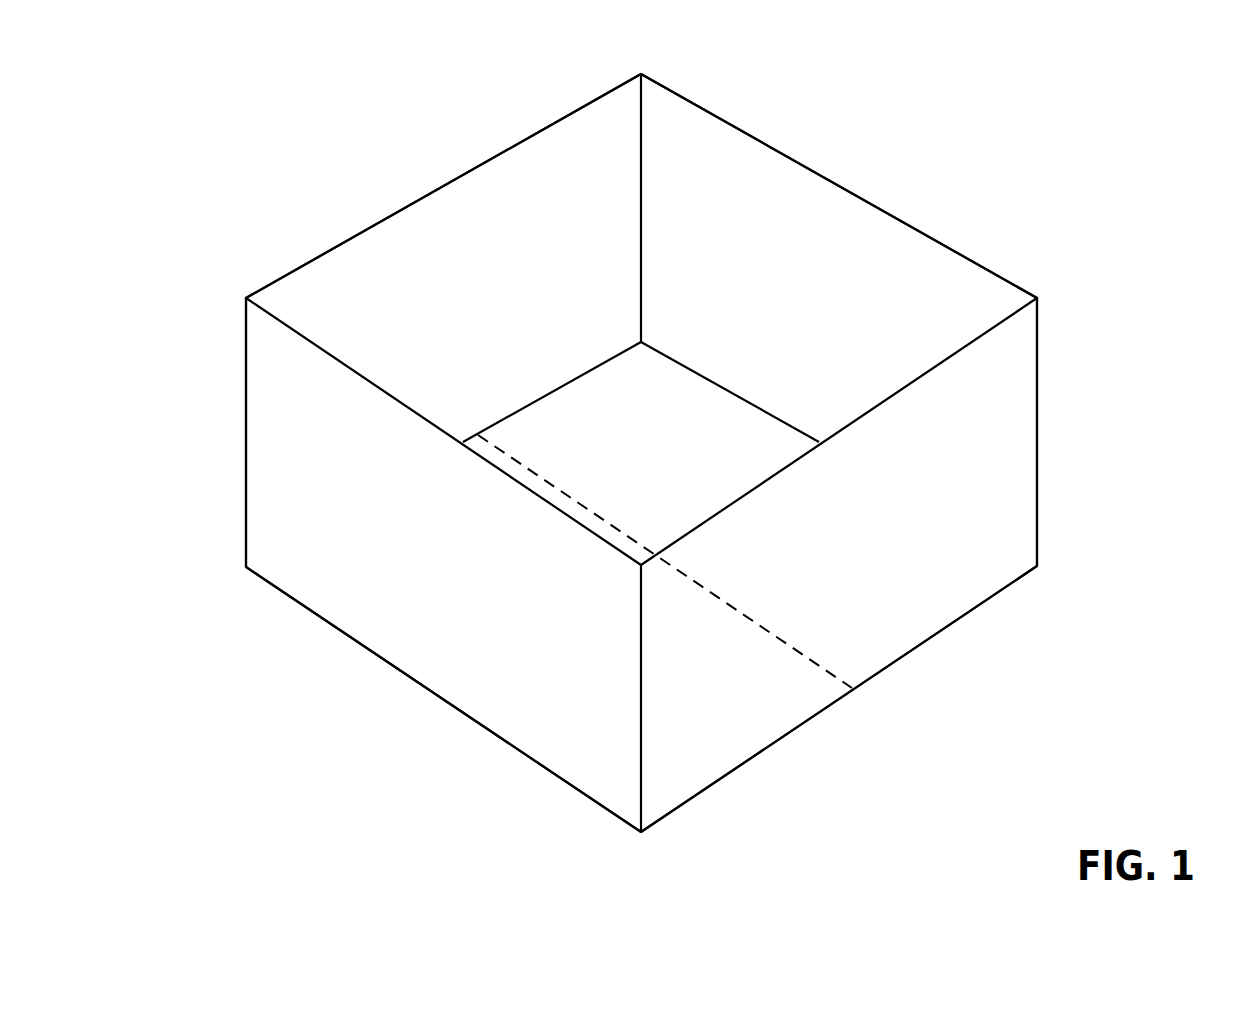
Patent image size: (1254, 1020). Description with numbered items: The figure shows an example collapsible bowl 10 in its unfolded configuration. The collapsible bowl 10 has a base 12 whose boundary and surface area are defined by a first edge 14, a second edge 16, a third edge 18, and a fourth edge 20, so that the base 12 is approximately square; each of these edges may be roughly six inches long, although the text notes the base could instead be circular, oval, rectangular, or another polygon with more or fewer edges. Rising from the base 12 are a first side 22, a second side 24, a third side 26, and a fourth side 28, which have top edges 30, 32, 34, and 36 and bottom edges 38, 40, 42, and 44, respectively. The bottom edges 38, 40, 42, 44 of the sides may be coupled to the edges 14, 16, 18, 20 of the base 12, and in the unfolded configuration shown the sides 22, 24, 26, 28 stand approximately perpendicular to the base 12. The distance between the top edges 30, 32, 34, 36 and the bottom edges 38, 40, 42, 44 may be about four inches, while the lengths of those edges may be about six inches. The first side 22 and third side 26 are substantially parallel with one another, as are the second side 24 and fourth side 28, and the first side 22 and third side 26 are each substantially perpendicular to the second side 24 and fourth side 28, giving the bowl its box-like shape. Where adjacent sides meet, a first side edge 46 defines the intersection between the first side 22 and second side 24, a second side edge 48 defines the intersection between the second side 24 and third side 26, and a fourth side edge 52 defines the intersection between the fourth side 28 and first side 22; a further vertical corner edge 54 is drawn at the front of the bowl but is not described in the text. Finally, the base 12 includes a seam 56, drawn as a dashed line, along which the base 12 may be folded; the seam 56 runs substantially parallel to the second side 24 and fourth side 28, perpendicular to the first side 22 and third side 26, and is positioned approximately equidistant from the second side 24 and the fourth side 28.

The collapsible bowl 10 is at (403, 125).
The base 12 is at (639, 421).
The first edge 14 is at (912, 652).
The second edge 16 is at (683, 367).
The third edge 18 is at (598, 365).
The fourth edge 20 is at (373, 648).
The first side 22 is at (870, 536).
The second side 24 is at (807, 281).
The third side 26 is at (489, 290).
The fourth side 28 is at (400, 530).
The top edge 30 is at (757, 490).
The top edge 32 is at (845, 190).
The top edge 34 is at (336, 247).
The top edge 36 is at (363, 379).
The bottom edge 38 is at (800, 727).
The bottom edge 40 is at (768, 410).
The bottom edge 42 is at (543, 398).
The bottom edge 44 is at (310, 608).
The first side edge 46 is at (1040, 370).
The second side edge 48 is at (642, 205).
The fourth side edge 52 is at (246, 403).
The front vertical corner edge 54 is at (641, 667).
The seam 56 is at (593, 510).